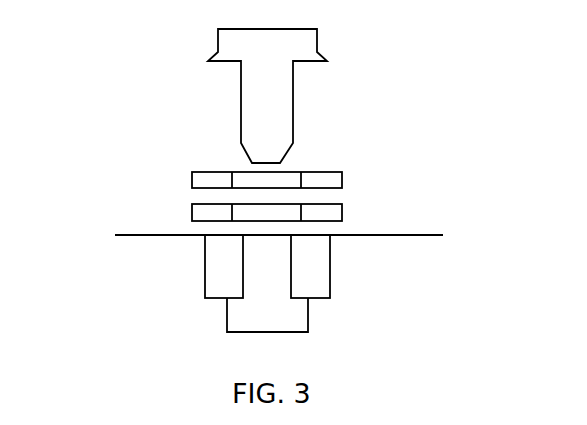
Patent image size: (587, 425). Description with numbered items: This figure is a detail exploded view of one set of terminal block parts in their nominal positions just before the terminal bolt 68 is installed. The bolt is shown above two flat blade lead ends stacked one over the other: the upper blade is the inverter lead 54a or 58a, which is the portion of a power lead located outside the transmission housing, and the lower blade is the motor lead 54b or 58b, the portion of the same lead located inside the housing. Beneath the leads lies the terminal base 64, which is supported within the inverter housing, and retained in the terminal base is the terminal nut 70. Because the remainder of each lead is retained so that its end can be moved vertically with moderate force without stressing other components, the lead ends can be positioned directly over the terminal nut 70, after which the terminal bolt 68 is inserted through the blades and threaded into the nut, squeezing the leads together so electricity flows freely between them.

The terminal bolt 68 is at (240, 125).
The inverter lead 54a is at (368, 137).
The inverter lead 58a is at (343, 180).
The motor lead 54b is at (189, 185).
The motor lead 58b is at (192, 212).
The terminal base 64 is at (397, 235).
The terminal nut 70 is at (330, 275).